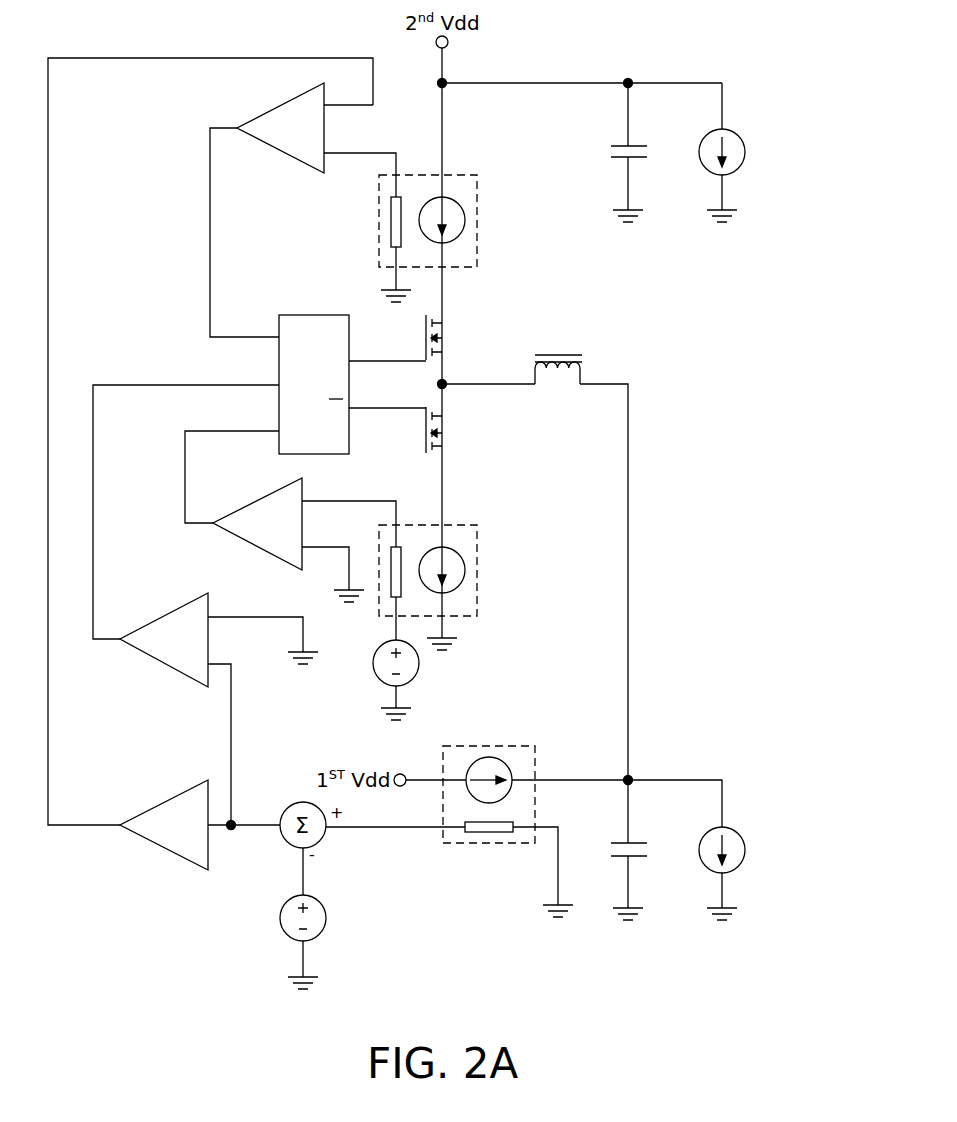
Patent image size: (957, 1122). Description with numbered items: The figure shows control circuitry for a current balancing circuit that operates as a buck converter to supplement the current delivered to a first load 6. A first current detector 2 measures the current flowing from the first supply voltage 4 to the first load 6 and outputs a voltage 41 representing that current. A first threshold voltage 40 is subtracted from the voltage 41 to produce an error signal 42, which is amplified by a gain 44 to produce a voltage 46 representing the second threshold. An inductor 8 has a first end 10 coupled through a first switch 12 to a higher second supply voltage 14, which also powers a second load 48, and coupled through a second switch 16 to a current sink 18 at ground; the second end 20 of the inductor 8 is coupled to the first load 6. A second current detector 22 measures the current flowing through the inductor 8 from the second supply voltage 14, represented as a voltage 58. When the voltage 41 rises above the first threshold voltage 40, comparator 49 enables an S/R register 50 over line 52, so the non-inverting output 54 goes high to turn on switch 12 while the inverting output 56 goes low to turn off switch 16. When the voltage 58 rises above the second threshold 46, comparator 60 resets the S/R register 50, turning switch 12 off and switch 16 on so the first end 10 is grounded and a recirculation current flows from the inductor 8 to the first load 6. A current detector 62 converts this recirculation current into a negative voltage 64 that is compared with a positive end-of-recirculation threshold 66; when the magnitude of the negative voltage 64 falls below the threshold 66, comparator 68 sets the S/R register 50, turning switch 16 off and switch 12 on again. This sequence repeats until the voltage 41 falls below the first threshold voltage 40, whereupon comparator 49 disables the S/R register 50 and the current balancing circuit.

The first current detector 2 is at (518, 745).
The first supply voltage 4 is at (426, 778).
The first load 6 is at (745, 828).
The inductor 8 is at (586, 352).
The first end 10 is at (505, 388).
The first switch 12 is at (449, 328).
The second supply voltage 14 is at (444, 63).
The second switch 16 is at (450, 432).
The current sink 18 is at (445, 633).
The second end 20 is at (630, 405).
The second current detector 22 is at (458, 175).
The first threshold voltage 40 is at (280, 932).
The voltage representing the first current 41 is at (385, 832).
The error signal 42 is at (257, 820).
The gain 44 is at (157, 800).
The voltage representing the second threshold 46 is at (50, 712).
The second load 48 is at (744, 125).
The comparator 49 is at (164, 610).
The S/R register 50 is at (315, 315).
The line 52 is at (95, 538).
The non-inverting output 54 is at (379, 358).
The inverting output 56 is at (380, 412).
The voltage representing the inductor current 58 is at (361, 152).
The comparator 60 is at (254, 160).
The current detector 62 is at (460, 525).
The negative voltage 64 is at (350, 501).
The end-of-recirculation threshold 66 is at (373, 677).
The comparator 68 is at (249, 498).